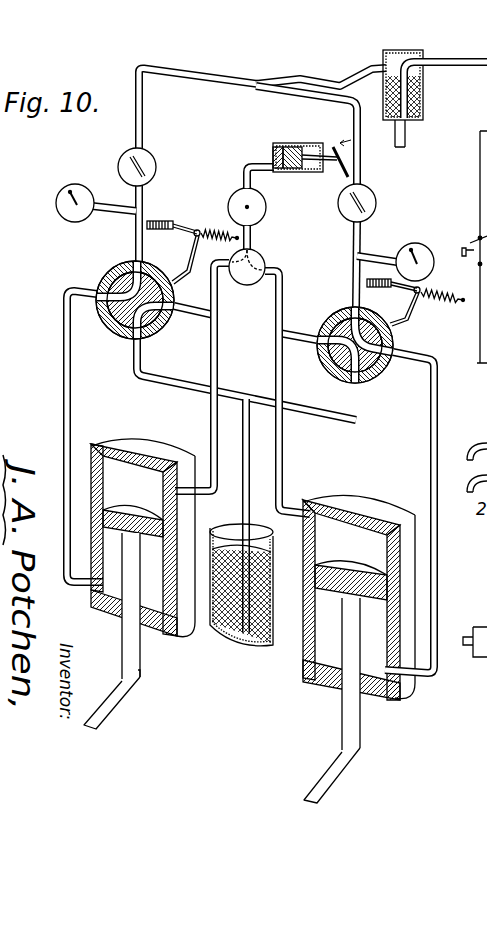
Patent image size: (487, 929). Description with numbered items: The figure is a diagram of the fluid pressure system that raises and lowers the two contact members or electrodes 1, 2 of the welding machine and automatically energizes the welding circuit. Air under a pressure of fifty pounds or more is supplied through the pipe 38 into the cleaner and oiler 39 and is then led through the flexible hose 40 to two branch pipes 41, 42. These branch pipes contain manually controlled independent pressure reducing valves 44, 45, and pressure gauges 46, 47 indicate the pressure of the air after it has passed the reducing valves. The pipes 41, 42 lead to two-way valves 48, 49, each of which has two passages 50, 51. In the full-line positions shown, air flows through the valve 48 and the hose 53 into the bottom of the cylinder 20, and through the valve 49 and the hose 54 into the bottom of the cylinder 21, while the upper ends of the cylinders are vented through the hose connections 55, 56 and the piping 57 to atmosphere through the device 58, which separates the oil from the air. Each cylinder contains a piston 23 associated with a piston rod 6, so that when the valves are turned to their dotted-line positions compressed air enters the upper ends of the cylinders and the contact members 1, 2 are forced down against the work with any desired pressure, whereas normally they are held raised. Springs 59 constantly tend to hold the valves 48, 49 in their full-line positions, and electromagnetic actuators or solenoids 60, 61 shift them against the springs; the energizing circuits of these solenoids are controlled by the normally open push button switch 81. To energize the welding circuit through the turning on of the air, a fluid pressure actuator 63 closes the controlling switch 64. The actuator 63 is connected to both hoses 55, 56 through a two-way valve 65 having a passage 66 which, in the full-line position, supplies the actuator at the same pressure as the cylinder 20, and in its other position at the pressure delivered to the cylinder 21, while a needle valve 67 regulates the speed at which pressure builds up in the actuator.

The contact member 1 is at (116, 692).
The contact member 2 is at (330, 771).
The piston rod 6 is at (122, 627).
The cylinder 20 is at (95, 450).
The cylinder 21 is at (420, 563).
The piston 23 is at (137, 504).
The pipe 38 is at (443, 60).
The cleaner and oiler 39 is at (425, 88).
The flexible hose 40 is at (353, 76).
The branch pipe 41 is at (144, 121).
The branch pipe 42 is at (364, 160).
The pressure reducing valve 44 is at (157, 160).
The pressure reducing valve 45 is at (376, 203).
The pressure gauge 46 is at (67, 190).
The pressure gauge 47 is at (419, 248).
The two-way valve 48 is at (105, 280).
The two-way valve 49 is at (370, 377).
The passage 50 is at (134, 268).
The passage 51 is at (160, 279).
The hose 53 is at (64, 385).
The hose 54 is at (430, 453).
The hose connection 55 is at (212, 406).
The hose connection 56 is at (284, 446).
The piping 57 is at (246, 395).
The oil separating device 58 is at (251, 636).
The spring 59 is at (213, 230).
The electromagnetic actuator 60 is at (163, 220).
The electromagnetic actuator 61 is at (368, 281).
The fluid pressure actuator 63 is at (300, 143).
The controlling switch 64 is at (335, 166).
The two-way valve 65 is at (265, 258).
The passage 66 is at (246, 286).
The needle valve 67 is at (256, 201).
The push button switch 81 is at (468, 258).